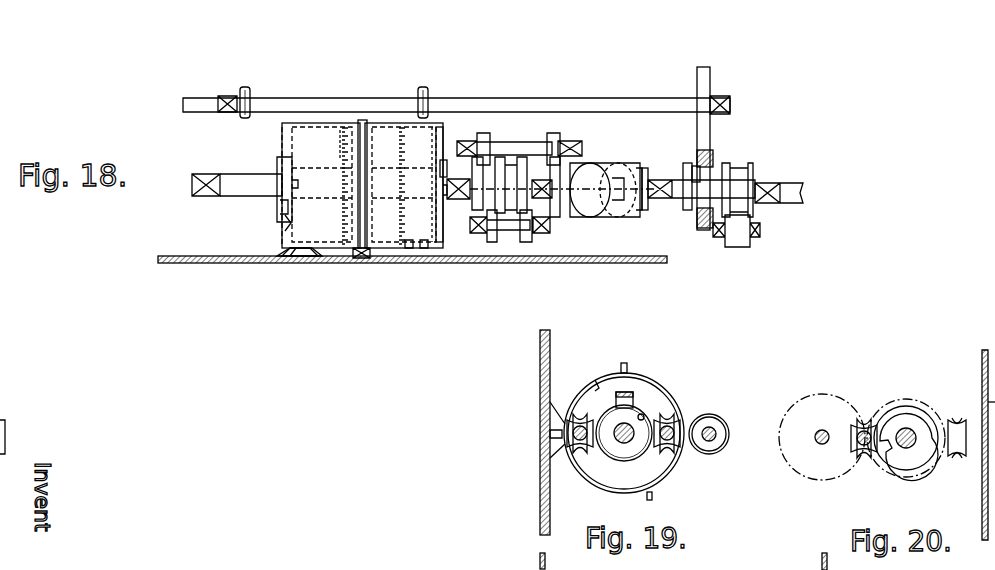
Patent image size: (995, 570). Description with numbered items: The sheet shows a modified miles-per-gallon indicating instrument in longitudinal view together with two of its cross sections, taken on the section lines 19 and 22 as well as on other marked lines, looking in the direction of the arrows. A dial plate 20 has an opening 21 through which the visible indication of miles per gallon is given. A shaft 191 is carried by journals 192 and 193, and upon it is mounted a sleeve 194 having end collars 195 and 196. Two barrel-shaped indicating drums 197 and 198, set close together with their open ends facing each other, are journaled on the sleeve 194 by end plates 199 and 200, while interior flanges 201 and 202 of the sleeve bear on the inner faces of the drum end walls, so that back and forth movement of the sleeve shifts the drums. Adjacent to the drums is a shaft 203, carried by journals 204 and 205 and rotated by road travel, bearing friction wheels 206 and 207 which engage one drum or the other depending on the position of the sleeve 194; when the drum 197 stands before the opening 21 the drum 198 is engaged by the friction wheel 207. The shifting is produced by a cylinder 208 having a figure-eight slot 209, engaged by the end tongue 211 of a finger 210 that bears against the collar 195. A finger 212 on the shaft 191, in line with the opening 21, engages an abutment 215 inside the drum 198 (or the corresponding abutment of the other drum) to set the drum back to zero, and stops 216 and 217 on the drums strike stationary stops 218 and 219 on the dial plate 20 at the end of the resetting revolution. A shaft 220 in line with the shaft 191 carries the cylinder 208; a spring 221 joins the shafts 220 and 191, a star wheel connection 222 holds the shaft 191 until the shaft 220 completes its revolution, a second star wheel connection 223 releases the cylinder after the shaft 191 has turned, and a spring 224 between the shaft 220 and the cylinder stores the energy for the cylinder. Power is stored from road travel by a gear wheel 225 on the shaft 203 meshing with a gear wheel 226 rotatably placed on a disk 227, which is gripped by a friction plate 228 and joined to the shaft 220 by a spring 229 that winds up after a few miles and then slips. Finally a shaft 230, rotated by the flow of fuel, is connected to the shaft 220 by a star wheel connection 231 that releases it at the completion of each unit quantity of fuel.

In FIG. 18, the section line 19— 19 is at (547, 317).
In FIG. 18, the dial plate 20 is at (215, 258).
In FIG. 19, the dial plate 20 is at (540, 488).
In FIG. 18, the opening 21 is at (782, 297).
In FIG. 18, the section line 22— 22 is at (365, 327).
In FIG. 18, the shaft 191 is at (228, 180).
In FIG. 18, the journal 192 is at (192, 186).
In FIG. 18, the journal 193 is at (446, 195).
In FIG. 18, the sleeve 194 is at (362, 200).
In FIG. 18, the end collar 195 is at (445, 190).
In FIG. 18, the end collar 196 is at (282, 205).
In FIG. 18, the indicating drum 197 is at (300, 123).
In FIG. 18, the indicating drum 198 is at (376, 123).
In FIG. 19, the indicating drum 198 is at (608, 490).
In FIG. 18, the end plate 199 is at (292, 140).
In FIG. 18, the end plate 200 is at (442, 185).
In FIG. 19, the end plate 200 is at (652, 400).
In FIG. 18, the interior flange 201 is at (290, 225).
In FIG. 18, the interior flange 202 is at (427, 248).
In FIG. 18, the shaft 203 is at (271, 98).
In FIG. 19, the shaft 203 is at (712, 432).
In FIG. 20, the shaft 203 is at (820, 443).
In FIG. 18, the journal 204 is at (722, 96).
In FIG. 18, the journal 205 is at (225, 96).
In FIG. 18, the friction wheel 206 is at (244, 87).
In FIG. 18, the friction wheel 207 is at (422, 87).
In FIG. 19, the friction wheel 207 is at (713, 450).
In FIG. 18, the cylinder 208 is at (596, 163).
In FIG. 18, the slot 209 is at (625, 212).
In FIG. 18, the finger 210 is at (455, 179).
In FIG. 19, the finger 210 is at (628, 394).
In FIG. 18, the end tongue 211 is at (622, 175).
In FIG. 18, the finger 212 is at (341, 140).
In FIG. 19, the abutment 215 is at (596, 385).
In FIG. 18, the stop 216 is at (292, 180).
In FIG. 19, the stop 216 is at (623, 363).
In FIG. 18, the stop 217 is at (412, 195).
In FIG. 19, the stop 217 is at (650, 500).
In FIG. 18, the stationary stop 218 is at (292, 258).
In FIG. 18, the stationary stop 219 is at (357, 258).
In FIG. 19, the stationary stop 219 is at (550, 428).
In FIG. 18, the shaft 220 is at (665, 200).
In FIG. 19, the shaft 220 is at (632, 445).
In FIG. 20, the shaft 220 is at (910, 443).
In FIG. 18, the spring 221 is at (508, 232).
In FIG. 18, the star wheel connection 222 is at (500, 230).
In FIG. 19, the star wheel connection 222 is at (578, 448).
In FIG. 18, the star wheel connection 223 is at (510, 142).
In FIG. 19, the star wheel connection 223 is at (678, 425).
In FIG. 18, the spring 224 is at (647, 210).
In FIG. 18, the gear wheel 225 is at (703, 67).
In FIG. 20, the gear wheel 225 is at (815, 395).
In FIG. 18, the gear wheel 226 is at (702, 228).
In FIG. 20, the gear wheel 226 is at (907, 400).
In FIG. 18, the disk 227 is at (702, 172).
In FIG. 18, the friction plate 228 is at (712, 155).
In FIG. 18, the spring 229 is at (681, 175).
In FIG. 18, the shaft 230 is at (795, 192).
In FIG. 18, the star wheel connection 231 is at (738, 237).
In FIG. 20, the star wheel connection 231 is at (954, 424).